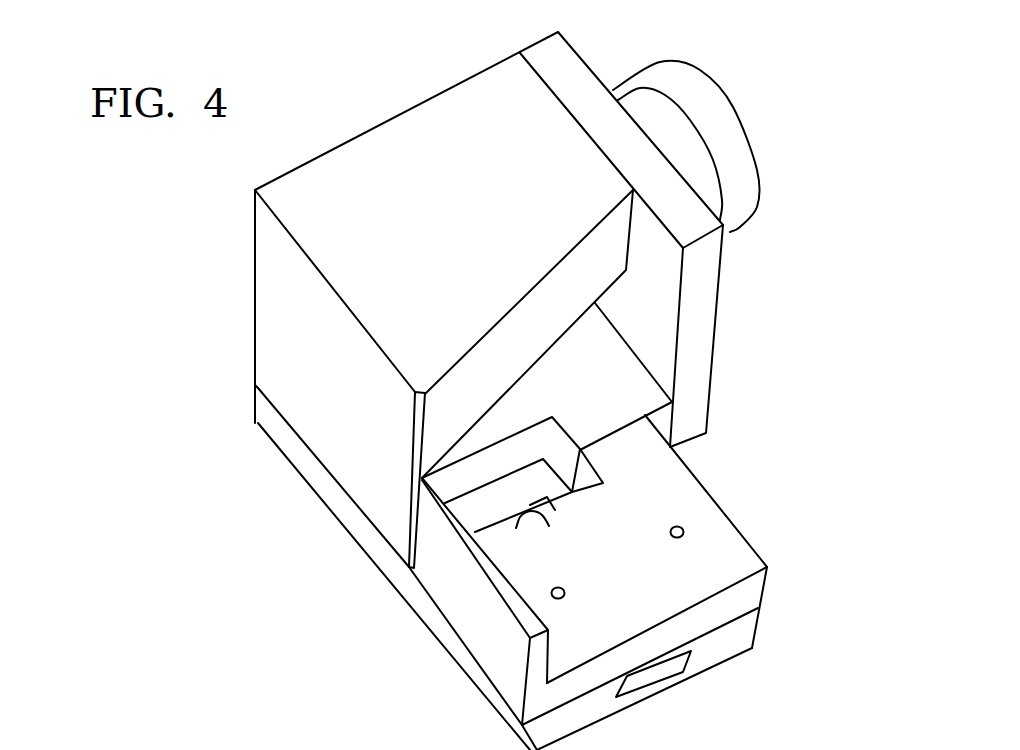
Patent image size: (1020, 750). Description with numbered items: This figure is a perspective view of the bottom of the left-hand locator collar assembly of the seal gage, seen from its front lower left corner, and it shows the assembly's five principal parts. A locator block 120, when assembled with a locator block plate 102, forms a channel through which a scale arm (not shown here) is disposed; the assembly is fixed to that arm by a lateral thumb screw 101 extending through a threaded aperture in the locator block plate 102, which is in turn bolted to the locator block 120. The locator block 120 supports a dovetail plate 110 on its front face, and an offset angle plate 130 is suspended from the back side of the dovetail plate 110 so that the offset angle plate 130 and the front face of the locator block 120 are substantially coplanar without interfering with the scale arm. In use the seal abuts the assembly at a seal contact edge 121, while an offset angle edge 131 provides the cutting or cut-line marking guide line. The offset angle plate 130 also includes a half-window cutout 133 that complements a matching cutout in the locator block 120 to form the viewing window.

The thumb screw 101 is at (707, 100).
The locator block plate 102 is at (698, 228).
The dovetail plate 110 is at (372, 570).
The locator block 120 is at (284, 320).
The seal contact edge 121 is at (418, 442).
The offset angle plate 130 is at (662, 490).
The offset angle edge 131 is at (477, 627).
The half-window cutout 133 is at (548, 526).